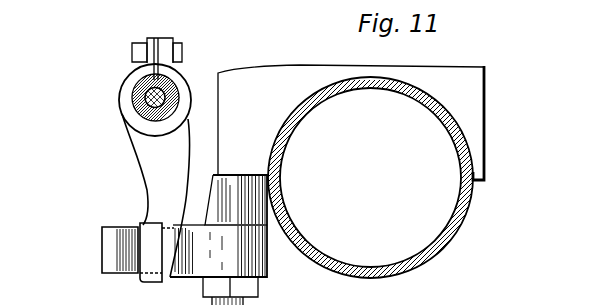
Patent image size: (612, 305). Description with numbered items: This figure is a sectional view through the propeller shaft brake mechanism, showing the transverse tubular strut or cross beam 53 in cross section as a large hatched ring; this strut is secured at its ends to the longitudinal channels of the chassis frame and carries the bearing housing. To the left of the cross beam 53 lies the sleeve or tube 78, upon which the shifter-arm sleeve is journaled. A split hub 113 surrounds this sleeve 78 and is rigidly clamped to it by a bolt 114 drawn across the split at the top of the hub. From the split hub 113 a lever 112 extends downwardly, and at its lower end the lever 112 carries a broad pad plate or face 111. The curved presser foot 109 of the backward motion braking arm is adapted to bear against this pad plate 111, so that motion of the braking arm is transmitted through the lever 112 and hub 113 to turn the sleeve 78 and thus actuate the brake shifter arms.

The tubular strut or cross beam 53 is at (469, 211).
The sleeve or tube 78 is at (132, 98).
The curved presser foot 109 is at (115, 247).
The pad plate or face 111 is at (138, 232).
The lever 112 is at (161, 163).
The split hub 113 is at (127, 113).
The bolt 114 is at (133, 54).